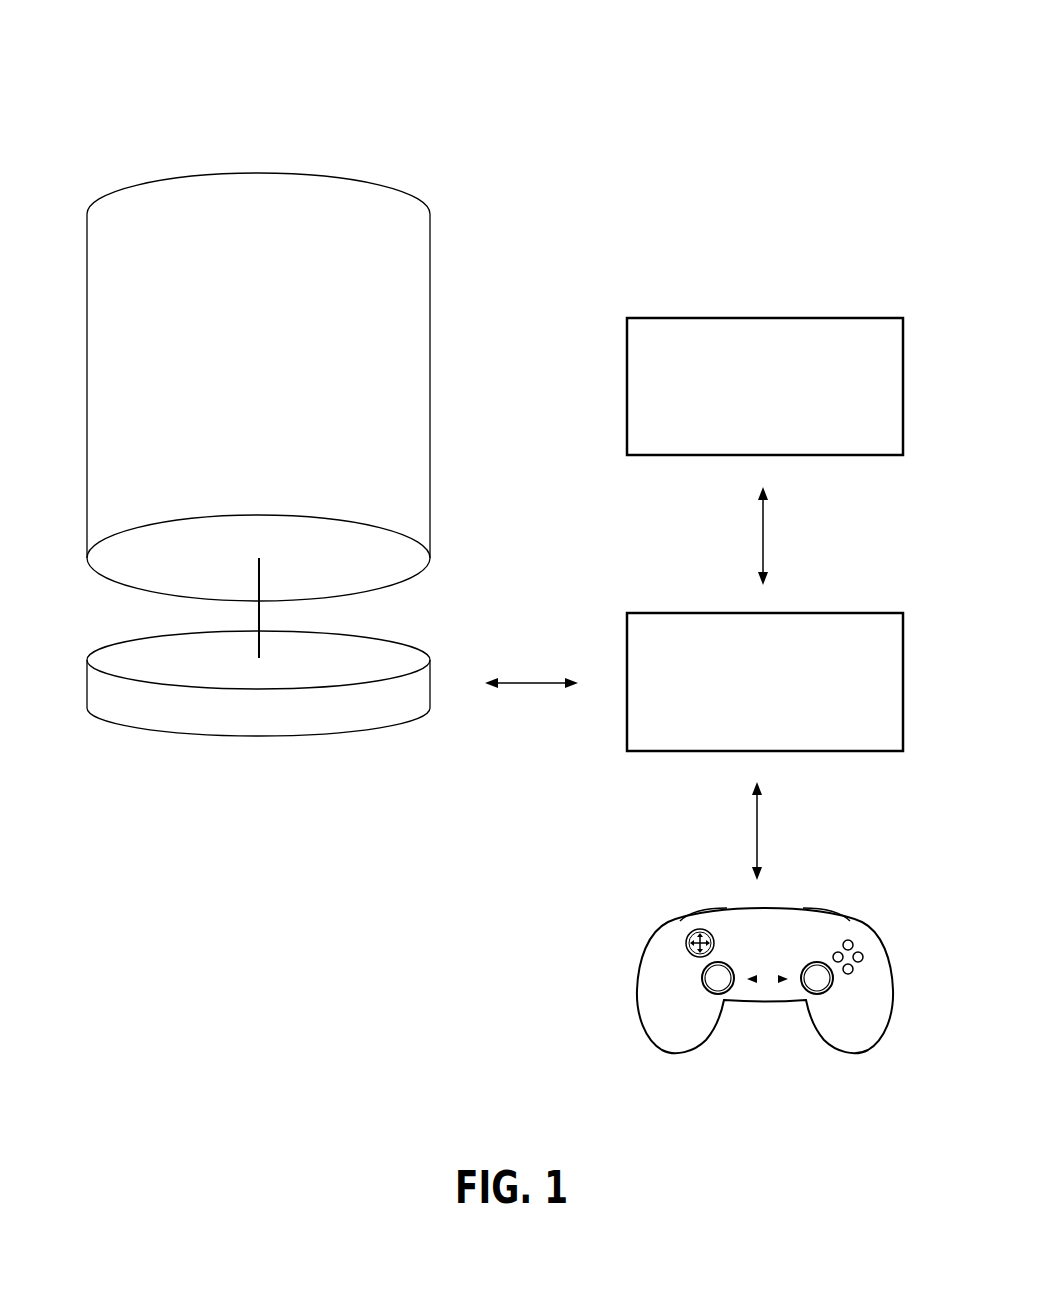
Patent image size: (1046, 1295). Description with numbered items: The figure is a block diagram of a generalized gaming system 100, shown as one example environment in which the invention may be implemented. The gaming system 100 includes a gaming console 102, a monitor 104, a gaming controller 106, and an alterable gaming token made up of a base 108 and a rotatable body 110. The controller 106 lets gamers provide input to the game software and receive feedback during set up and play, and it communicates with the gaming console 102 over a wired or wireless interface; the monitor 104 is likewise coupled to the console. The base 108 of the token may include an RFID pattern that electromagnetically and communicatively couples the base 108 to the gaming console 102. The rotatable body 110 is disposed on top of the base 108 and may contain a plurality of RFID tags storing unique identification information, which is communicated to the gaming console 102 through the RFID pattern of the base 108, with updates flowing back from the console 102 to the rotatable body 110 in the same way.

The gaming system 100 is at (650, 100).
The gaming console 102 is at (886, 692).
The monitor 104 is at (837, 398).
The gaming controller 106 is at (778, 1017).
The base 108 is at (322, 724).
The rotatable body 110 is at (274, 185).